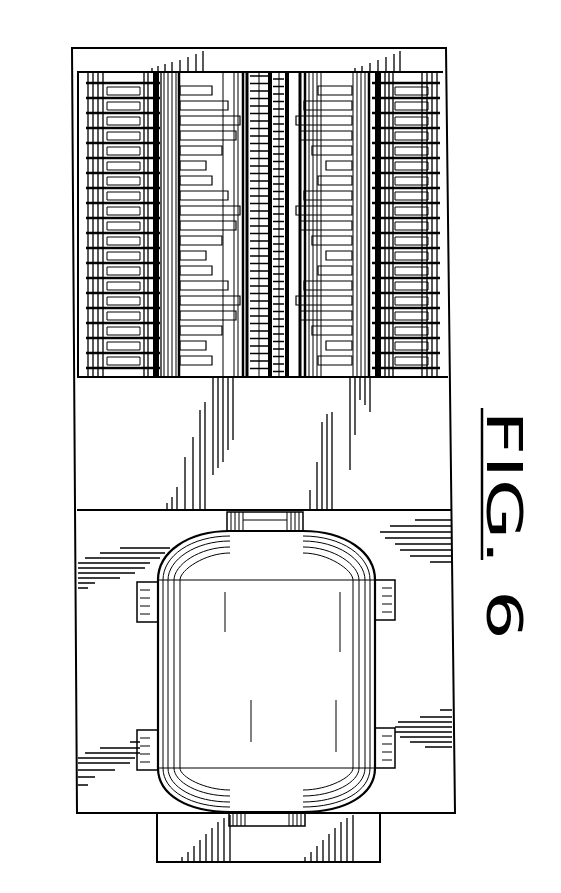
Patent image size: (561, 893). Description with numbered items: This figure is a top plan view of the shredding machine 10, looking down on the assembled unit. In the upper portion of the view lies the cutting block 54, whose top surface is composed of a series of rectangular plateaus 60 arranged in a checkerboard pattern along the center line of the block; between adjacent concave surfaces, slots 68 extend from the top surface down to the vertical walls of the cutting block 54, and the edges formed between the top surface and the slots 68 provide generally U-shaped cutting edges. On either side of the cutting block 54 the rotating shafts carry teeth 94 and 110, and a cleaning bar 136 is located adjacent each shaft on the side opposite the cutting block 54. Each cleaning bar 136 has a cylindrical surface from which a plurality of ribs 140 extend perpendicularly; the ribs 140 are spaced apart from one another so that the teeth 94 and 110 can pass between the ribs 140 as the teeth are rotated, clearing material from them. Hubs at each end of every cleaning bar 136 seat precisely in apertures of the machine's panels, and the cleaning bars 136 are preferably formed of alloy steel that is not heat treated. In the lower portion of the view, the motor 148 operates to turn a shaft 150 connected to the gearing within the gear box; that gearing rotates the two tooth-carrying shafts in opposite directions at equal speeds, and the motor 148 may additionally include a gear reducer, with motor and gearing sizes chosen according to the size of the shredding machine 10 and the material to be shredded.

The shredding machine 10 is at (470, 360).
The cutting block 54 is at (257, 73).
The rectangular plateaus 60 is at (277, 378).
The slots 68 is at (247, 116).
The teeth 94 is at (317, 95).
The teeth 110 is at (198, 88).
The cleaning bar 136 is at (121, 377).
The ribs 140 is at (152, 377).
The motor 148 is at (378, 690).
The shaft 150 is at (271, 510).